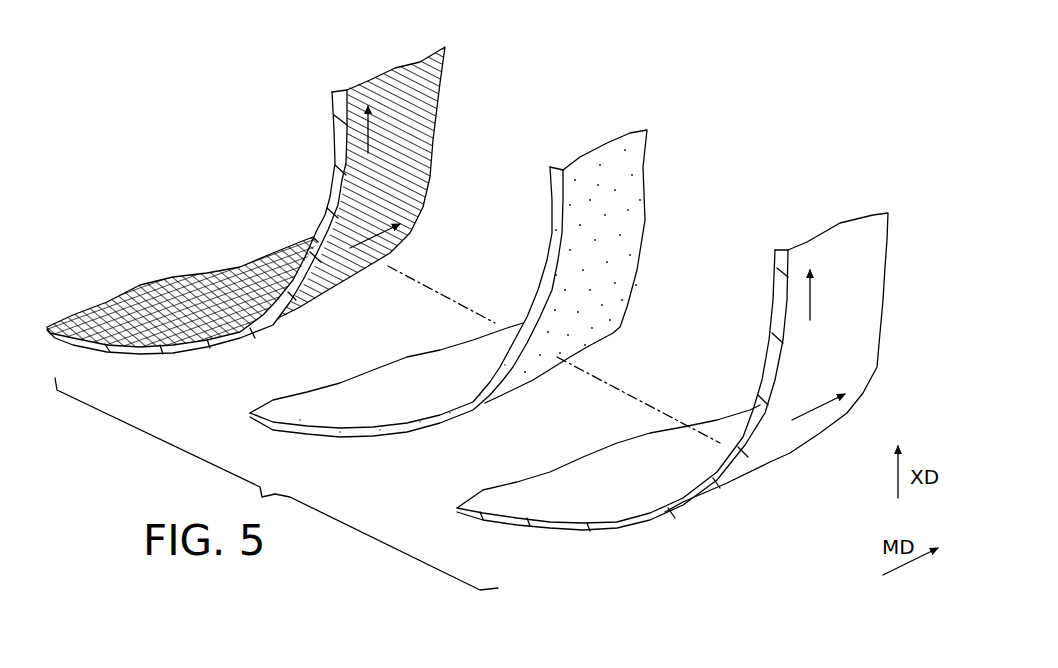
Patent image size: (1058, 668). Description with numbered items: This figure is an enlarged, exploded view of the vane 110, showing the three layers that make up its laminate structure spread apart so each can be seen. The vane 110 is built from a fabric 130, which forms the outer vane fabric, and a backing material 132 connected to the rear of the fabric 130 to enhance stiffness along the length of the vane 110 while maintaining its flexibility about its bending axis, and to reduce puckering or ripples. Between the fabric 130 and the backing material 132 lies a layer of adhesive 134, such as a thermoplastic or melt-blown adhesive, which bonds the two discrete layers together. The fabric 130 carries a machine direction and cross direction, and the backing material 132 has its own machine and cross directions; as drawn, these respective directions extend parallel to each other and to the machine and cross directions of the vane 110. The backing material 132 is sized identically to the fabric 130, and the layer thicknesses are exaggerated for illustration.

The vane 110 is at (268, 45).
The fabric 130 is at (873, 278).
The backing material 132 is at (424, 87).
The layer of adhesive 134 is at (617, 200).